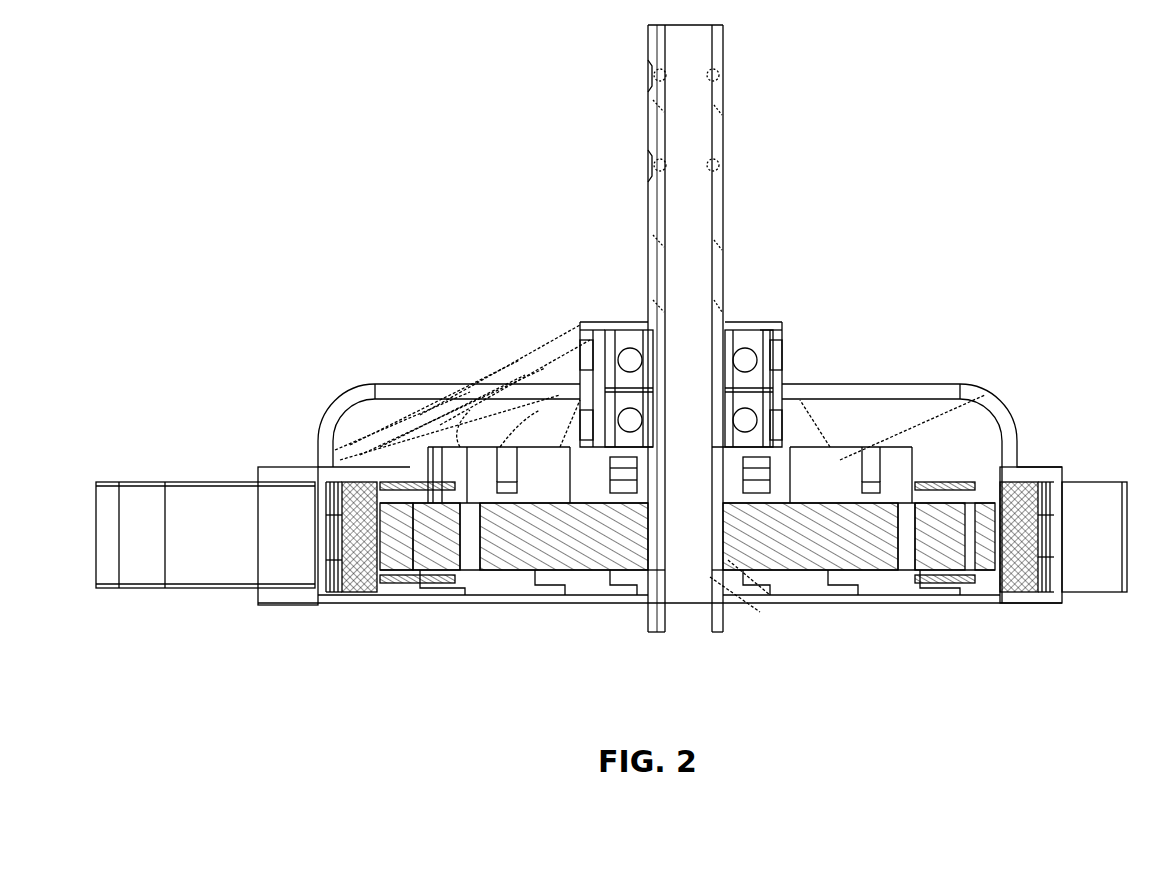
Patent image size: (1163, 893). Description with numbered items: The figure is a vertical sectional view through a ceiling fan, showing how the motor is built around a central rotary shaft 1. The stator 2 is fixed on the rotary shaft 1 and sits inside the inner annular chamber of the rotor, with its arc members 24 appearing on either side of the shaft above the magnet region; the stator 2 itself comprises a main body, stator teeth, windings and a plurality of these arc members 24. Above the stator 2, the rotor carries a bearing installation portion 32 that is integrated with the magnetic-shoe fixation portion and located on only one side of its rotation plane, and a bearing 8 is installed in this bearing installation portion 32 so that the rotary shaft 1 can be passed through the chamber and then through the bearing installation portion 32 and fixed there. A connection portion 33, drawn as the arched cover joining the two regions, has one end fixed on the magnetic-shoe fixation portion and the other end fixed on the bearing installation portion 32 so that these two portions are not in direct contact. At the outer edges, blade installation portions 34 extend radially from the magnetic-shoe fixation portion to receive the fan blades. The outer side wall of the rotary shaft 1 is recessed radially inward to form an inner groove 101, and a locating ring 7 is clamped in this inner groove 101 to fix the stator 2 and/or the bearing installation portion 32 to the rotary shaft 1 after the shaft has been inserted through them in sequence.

The rotary shaft 1 is at (690, 352).
The stator 2 is at (860, 550).
The locating ring 7 is at (567, 381).
The bearing 8 is at (625, 372).
The arc member 24 is at (838, 472).
The bearing installation portion 32 is at (780, 390).
The connection portion 33 is at (905, 384).
The blade installation portion 34 is at (237, 525).
The inner groove 101 is at (722, 572).